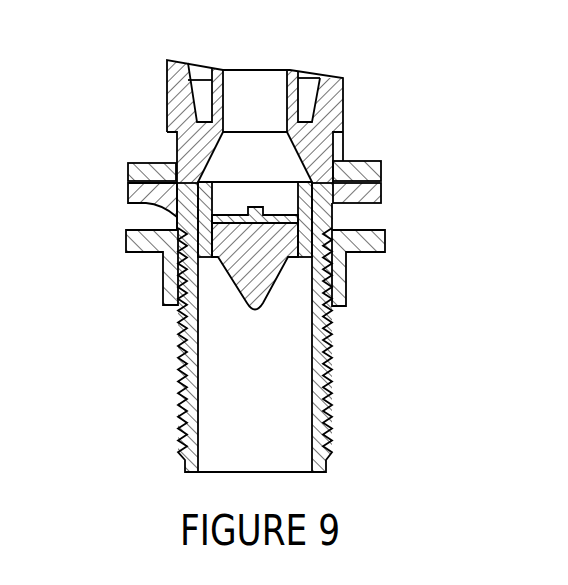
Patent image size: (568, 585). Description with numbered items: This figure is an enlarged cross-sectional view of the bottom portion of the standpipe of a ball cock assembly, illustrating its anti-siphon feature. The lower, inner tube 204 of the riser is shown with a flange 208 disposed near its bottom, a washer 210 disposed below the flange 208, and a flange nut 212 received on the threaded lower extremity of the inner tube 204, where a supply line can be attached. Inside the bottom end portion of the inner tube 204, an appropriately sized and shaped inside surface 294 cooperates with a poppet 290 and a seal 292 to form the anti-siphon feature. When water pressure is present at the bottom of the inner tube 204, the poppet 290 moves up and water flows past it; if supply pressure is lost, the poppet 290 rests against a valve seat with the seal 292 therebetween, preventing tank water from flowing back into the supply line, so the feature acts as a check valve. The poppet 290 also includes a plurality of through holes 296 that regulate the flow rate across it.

The inner tube 204 is at (166, 62).
The inside surface 294 is at (206, 166).
The flange 208 is at (147, 175).
The washer 210 is at (133, 204).
The flange nut 212 is at (172, 288).
The seal 292 is at (325, 223).
The poppet 290 is at (268, 297).
The through holes 296 is at (232, 285).